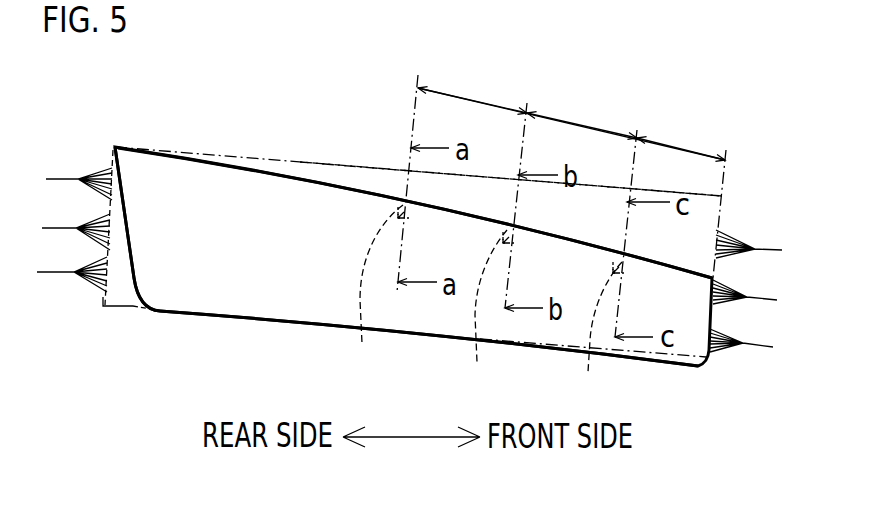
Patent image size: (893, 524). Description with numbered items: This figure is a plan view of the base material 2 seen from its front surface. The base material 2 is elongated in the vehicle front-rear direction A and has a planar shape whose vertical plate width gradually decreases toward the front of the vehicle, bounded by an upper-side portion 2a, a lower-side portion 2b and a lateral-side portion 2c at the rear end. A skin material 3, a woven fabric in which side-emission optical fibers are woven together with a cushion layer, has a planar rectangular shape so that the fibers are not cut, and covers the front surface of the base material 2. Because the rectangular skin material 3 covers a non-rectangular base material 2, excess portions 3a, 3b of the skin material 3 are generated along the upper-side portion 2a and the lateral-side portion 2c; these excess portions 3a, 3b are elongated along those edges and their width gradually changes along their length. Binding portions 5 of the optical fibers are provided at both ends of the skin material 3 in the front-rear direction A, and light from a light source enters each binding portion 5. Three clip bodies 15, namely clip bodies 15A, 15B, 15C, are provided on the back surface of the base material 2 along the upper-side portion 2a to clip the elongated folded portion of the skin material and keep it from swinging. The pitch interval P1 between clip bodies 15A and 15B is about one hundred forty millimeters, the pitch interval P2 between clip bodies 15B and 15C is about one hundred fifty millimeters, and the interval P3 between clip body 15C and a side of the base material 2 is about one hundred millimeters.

The base material 2 is at (222, 193).
The upper-side portion 2a is at (266, 167).
The lower-side portion 2b is at (277, 322).
The lateral-side portion 2c is at (126, 272).
The skin material 3 is at (311, 160).
The excess portion 3a is at (368, 178).
The excess portion 3b is at (117, 293).
The binding portion 5 is at (57, 177).
The clip body 15 is at (501, 307).
The clip body 15A is at (380, 296).
The clip body 15B is at (497, 316).
The clip body 15C is at (623, 336).
The pitch interval P1 is at (458, 93).
The pitch interval P2 is at (565, 123).
The interval P3 is at (672, 150).
The vehicle front-rear direction A is at (410, 438).